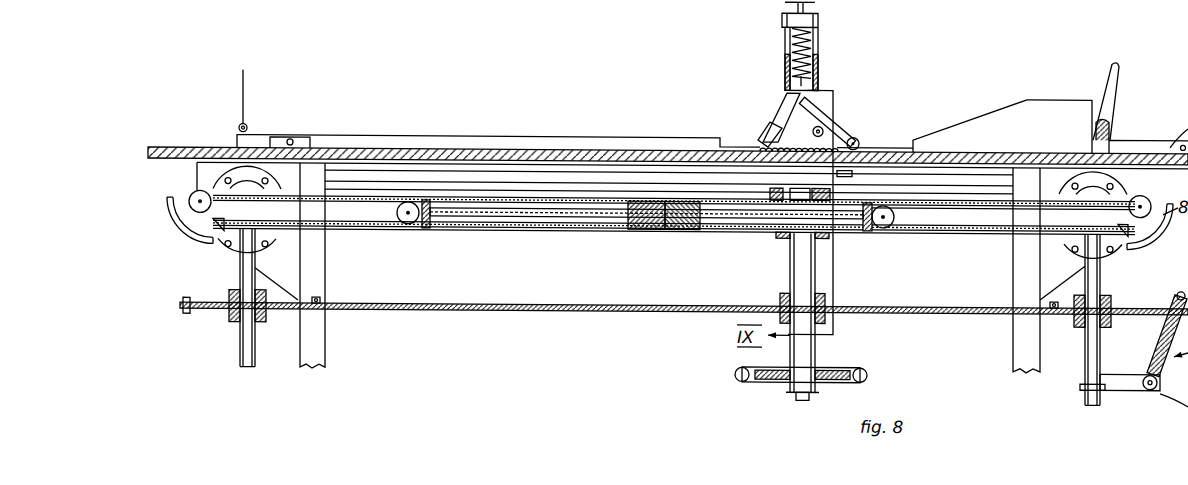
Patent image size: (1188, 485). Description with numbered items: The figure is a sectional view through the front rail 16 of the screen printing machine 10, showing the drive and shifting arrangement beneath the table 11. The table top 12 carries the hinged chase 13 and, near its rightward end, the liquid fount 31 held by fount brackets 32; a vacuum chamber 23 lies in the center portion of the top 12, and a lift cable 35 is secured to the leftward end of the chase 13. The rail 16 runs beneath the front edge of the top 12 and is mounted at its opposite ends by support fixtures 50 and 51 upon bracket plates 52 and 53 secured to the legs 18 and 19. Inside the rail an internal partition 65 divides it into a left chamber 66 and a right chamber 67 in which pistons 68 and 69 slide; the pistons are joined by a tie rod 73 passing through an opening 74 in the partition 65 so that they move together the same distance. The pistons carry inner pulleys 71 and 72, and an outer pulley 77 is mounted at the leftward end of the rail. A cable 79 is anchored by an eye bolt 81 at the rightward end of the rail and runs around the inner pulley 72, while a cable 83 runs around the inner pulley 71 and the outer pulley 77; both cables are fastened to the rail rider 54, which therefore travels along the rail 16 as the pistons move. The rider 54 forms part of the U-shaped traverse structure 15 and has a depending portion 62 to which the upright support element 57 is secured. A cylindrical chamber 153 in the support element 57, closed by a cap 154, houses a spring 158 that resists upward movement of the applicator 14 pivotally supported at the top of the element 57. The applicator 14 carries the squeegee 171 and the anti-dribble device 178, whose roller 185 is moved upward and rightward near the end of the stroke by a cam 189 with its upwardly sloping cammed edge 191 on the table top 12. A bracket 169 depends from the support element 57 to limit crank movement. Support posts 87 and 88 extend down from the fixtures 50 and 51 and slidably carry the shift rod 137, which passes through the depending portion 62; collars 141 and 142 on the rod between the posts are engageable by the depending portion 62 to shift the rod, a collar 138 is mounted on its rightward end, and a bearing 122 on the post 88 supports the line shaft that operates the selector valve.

The machine 10 is at (173, 327).
The table 11 is at (158, 165).
The table top 12 is at (181, 147).
The chase 13 is at (413, 139).
The liquid applicator 14 is at (772, 103).
The traverse structure 15 is at (822, 65).
The front rail 16 is at (595, 225).
The leg 18 is at (322, 359).
The leg 19 is at (1022, 362).
The vacuum chamber 23 is at (387, 169).
The liquid fount 31 is at (1107, 74).
The fount brackets 32 is at (1108, 121).
The lift cable 35 is at (247, 103).
The support fixture 50 is at (285, 233).
The support fixture 51 is at (1073, 227).
The bracket plate 52 is at (203, 238).
The bracket plate 53 is at (1127, 243).
The rail rider 54 is at (780, 233).
The upright support element 57 is at (818, 272).
The depending portion 62 is at (790, 263).
The internal partition 65 is at (657, 222).
The left chamber 66 is at (597, 205).
The right chamber 67 is at (988, 214).
The piston 68 is at (422, 223).
The piston 69 is at (865, 230).
The inner pulley 71 is at (408, 216).
The inner pulley 72 is at (887, 220).
The tie rod 73 is at (540, 216).
The opening 74 is at (683, 220).
The outer pulley 77 is at (197, 197).
The cable 79 is at (952, 220).
The eye bolt 81 is at (1133, 218).
The cable 83 is at (353, 217).
The support post 87 is at (242, 333).
The support post 88 is at (1085, 332).
The bearing 122 is at (1152, 391).
The shift rod 137 is at (610, 308).
The collar 138 is at (1160, 309).
The collar 141 is at (317, 309).
The collar 142 is at (1053, 309).
The cylindrical chamber 153 is at (790, 46).
The cap 154 is at (813, 15).
The spring 158 is at (817, 48).
The bracket 169 is at (830, 368).
The squeegee 171 is at (765, 121).
The anti-dribble device 178 is at (833, 108).
The roller 185 is at (857, 139).
The cam 189 is at (1036, 106).
The cammed edge 191 is at (990, 107).